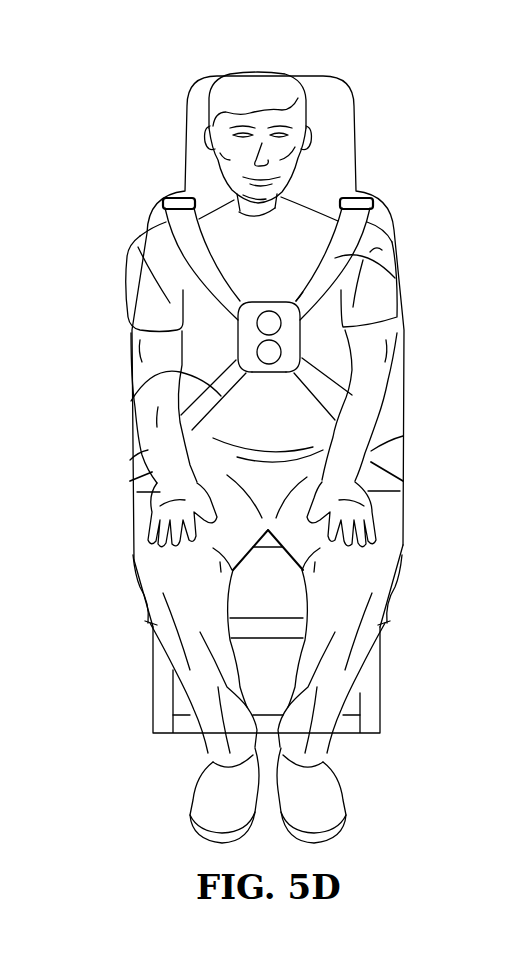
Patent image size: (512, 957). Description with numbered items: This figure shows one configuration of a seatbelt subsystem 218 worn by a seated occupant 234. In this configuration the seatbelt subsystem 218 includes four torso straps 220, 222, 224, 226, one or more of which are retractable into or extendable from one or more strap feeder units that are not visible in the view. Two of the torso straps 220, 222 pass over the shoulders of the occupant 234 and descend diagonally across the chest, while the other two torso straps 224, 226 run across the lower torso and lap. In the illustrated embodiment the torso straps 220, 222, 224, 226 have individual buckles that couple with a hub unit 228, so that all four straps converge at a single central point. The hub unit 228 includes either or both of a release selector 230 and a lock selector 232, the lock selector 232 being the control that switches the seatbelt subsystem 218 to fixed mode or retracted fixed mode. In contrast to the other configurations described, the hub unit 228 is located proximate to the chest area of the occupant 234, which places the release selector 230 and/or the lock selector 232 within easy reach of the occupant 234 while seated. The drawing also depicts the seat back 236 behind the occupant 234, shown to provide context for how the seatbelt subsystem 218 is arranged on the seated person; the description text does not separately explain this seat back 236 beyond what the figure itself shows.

The seatbelt subsystem 218 is at (381, 211).
The torso strap 220 is at (163, 207).
The torso strap 222 is at (396, 279).
The torso strap 224 is at (131, 401).
The torso strap 226 is at (388, 449).
The hub unit 228 is at (278, 300).
The release selector 230 is at (257, 301).
The lock selector 232 is at (265, 373).
The occupant 234 is at (284, 75).
The seat back 236 is at (403, 340).